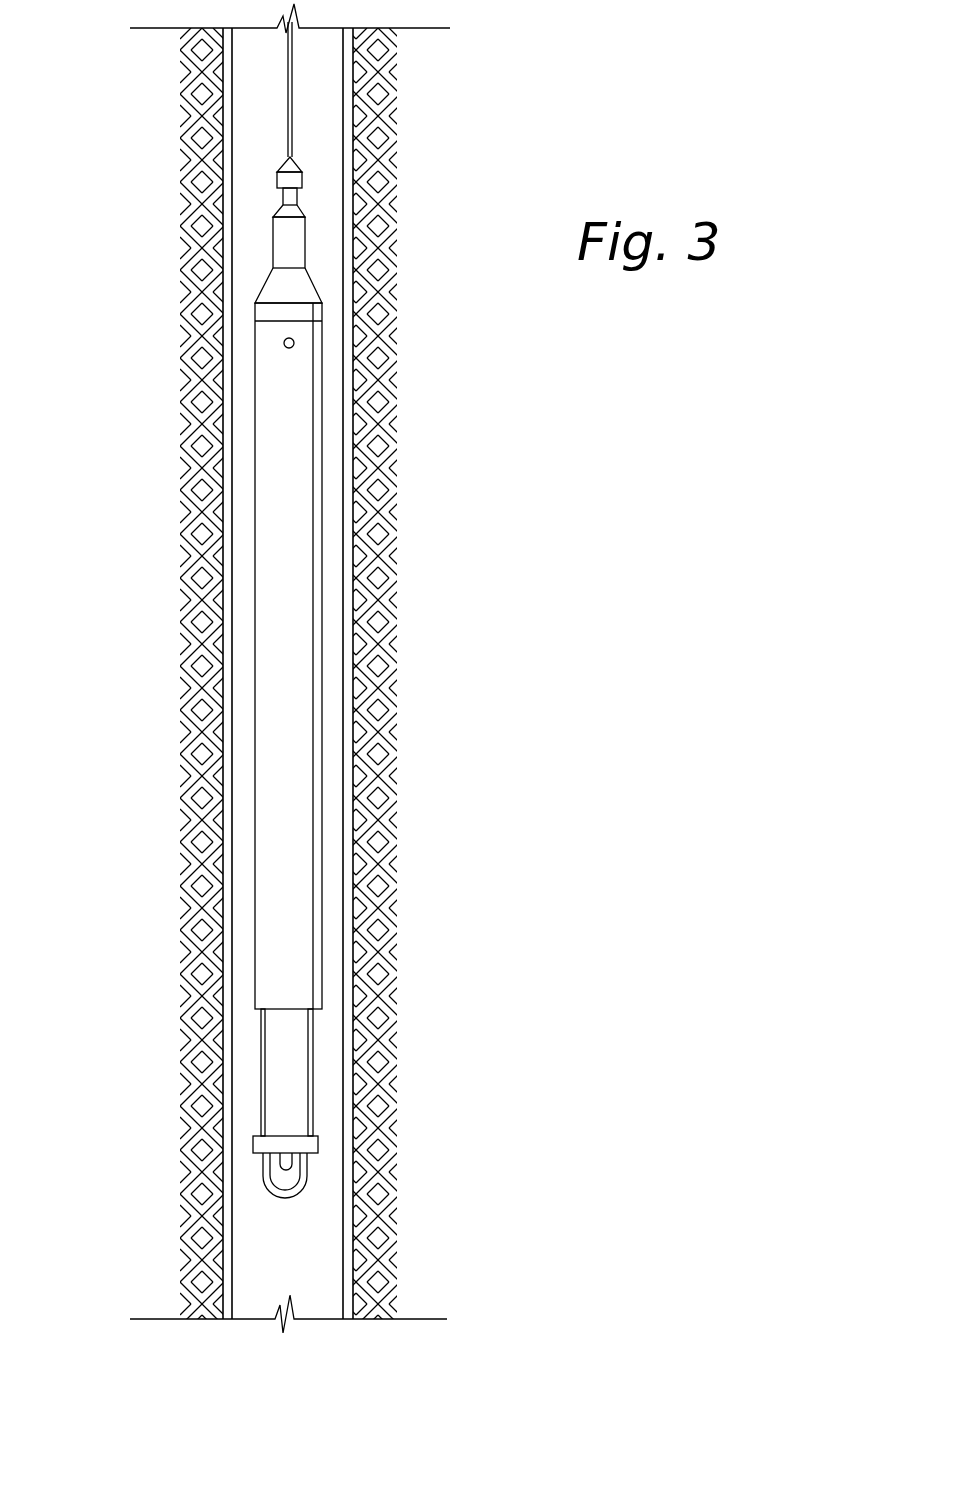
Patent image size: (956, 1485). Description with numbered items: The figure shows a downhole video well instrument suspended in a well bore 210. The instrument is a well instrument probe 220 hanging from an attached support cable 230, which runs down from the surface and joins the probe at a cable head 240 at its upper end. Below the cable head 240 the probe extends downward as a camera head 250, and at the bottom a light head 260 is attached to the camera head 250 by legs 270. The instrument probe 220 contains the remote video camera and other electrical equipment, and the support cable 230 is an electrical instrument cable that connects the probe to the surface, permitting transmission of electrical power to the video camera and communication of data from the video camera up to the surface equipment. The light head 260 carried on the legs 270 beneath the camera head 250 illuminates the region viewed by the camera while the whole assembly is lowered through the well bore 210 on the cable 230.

The well bore 210 is at (233, 88).
The well instrument probe 220 is at (214, 750).
The support cable 230 is at (290, 133).
The cable head 240 is at (250, 148).
The camera head 250 is at (287, 683).
The light head 260 is at (263, 1144).
The legs 270 is at (262, 1074).